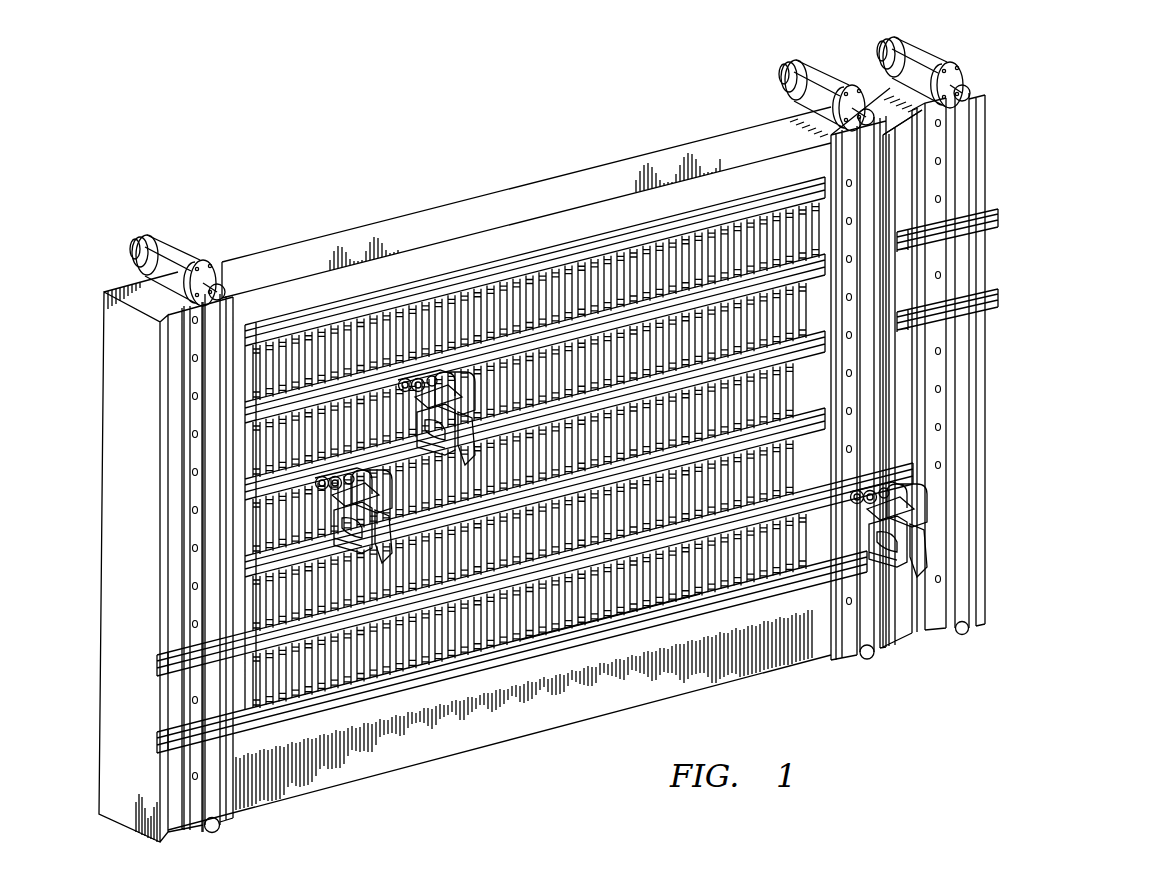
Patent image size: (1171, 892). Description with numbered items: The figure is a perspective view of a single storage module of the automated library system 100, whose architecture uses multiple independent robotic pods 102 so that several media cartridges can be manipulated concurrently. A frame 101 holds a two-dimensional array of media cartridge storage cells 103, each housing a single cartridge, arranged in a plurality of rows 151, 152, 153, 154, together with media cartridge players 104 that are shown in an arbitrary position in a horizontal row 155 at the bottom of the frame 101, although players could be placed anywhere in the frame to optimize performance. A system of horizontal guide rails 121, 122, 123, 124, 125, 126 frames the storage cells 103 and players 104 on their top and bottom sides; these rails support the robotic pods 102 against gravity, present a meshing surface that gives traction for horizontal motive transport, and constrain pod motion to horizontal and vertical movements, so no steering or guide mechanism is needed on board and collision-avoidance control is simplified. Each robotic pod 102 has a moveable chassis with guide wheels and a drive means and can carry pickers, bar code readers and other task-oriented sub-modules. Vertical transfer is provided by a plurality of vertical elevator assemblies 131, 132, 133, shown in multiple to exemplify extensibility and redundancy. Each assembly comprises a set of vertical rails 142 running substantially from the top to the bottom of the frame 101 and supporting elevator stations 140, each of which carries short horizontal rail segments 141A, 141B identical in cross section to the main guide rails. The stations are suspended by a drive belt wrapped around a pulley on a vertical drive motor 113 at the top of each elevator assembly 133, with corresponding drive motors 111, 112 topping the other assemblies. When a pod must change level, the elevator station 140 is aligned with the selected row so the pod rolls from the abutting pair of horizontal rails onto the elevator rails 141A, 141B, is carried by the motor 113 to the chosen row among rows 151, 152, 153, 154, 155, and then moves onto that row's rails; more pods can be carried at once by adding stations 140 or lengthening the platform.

The automated library system 100 is at (611, 440).
The frame 101 is at (420, 214).
The robotic pod 102 is at (942, 529).
The media cartridge storage cell 103 is at (508, 304).
The media cartridge player 104 is at (610, 636).
The drive motor 111 is at (181, 257).
The drive motor 112 is at (790, 84).
The vertical drive motor 113 is at (935, 68).
The horizontal guide rail 121 is at (247, 322).
The horizontal guide rail 122 is at (244, 410).
The horizontal guide rail 123 is at (244, 488).
The horizontal guide rail 124 is at (244, 565).
The horizontal guide rail 125 is at (160, 660).
The horizontal guide rail 126 is at (160, 738).
The vertical elevator assembly 131 is at (208, 557).
The vertical elevator assembly 132 is at (858, 424).
The vertical elevator assembly 133 is at (929, 400).
The elevator station 140 is at (1003, 400).
The elevator rail segment 141A is at (1000, 222).
The elevator rail segment 141B is at (972, 293).
The vertical rail 142 is at (1006, 360).
The row of media cartridge storage cells 151 is at (464, 309).
The row of media cartridge storage cells 152 is at (458, 386).
The row of media cartridge storage cells 153 is at (451, 466).
The row of media cartridge storage cells 154 is at (451, 544).
The horizontal row of media cartridge players 155 is at (457, 620).